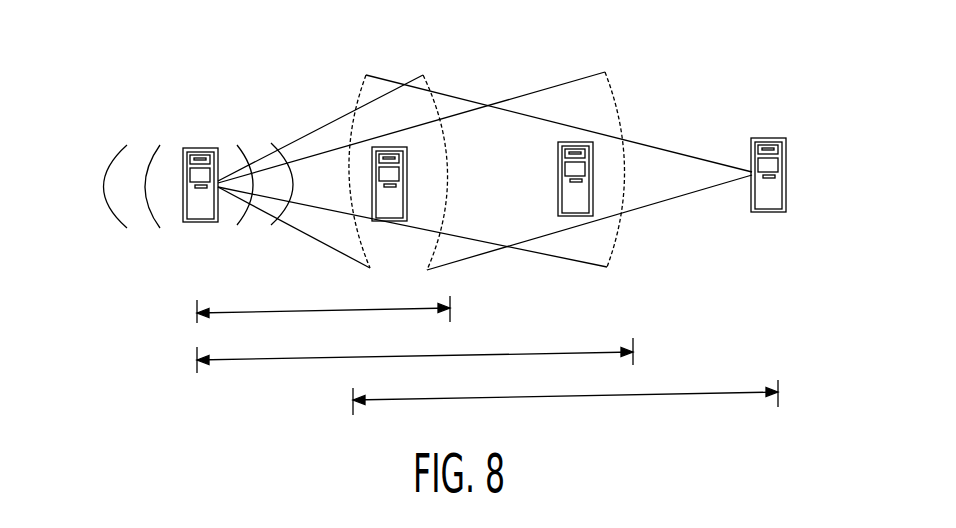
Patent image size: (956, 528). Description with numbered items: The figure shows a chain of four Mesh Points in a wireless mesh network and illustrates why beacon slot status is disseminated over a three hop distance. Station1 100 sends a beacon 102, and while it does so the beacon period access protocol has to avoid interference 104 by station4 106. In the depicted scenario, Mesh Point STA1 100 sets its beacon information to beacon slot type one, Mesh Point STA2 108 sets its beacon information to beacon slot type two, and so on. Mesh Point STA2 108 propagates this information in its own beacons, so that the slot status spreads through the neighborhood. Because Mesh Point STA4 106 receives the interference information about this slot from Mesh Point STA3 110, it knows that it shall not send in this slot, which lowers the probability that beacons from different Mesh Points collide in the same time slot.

The Station1 (Mesh Point STA1) 100 is at (189, 211).
The beacon 102 is at (328, 140).
The interference 104 is at (705, 382).
The station4 (Mesh Point STA4) 106 is at (783, 200).
The Mesh Point STA2 108 is at (395, 163).
The Mesh Point STA3 110 is at (590, 158).